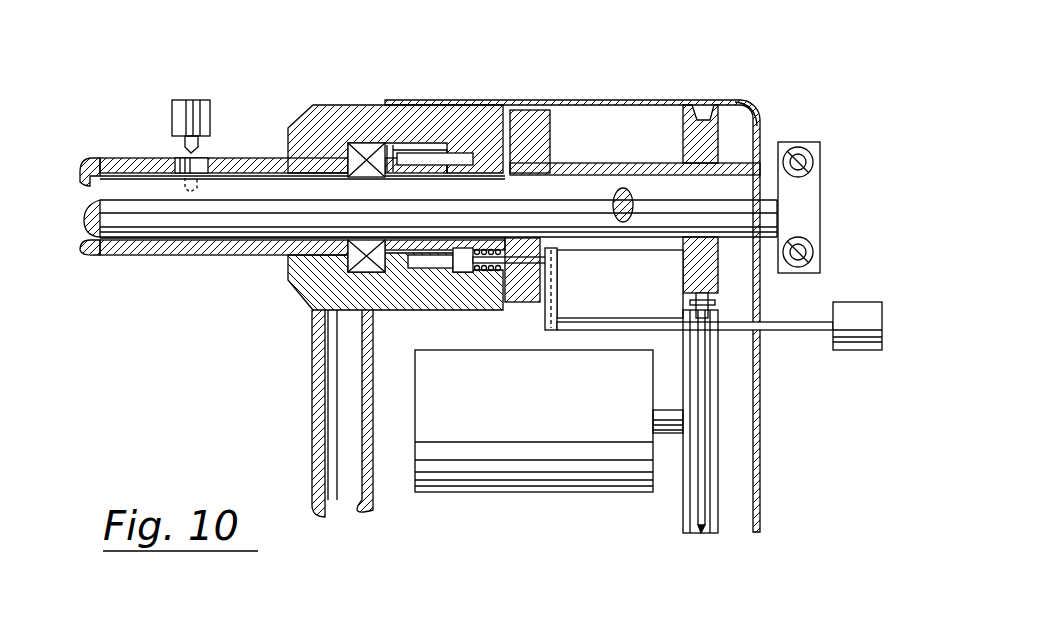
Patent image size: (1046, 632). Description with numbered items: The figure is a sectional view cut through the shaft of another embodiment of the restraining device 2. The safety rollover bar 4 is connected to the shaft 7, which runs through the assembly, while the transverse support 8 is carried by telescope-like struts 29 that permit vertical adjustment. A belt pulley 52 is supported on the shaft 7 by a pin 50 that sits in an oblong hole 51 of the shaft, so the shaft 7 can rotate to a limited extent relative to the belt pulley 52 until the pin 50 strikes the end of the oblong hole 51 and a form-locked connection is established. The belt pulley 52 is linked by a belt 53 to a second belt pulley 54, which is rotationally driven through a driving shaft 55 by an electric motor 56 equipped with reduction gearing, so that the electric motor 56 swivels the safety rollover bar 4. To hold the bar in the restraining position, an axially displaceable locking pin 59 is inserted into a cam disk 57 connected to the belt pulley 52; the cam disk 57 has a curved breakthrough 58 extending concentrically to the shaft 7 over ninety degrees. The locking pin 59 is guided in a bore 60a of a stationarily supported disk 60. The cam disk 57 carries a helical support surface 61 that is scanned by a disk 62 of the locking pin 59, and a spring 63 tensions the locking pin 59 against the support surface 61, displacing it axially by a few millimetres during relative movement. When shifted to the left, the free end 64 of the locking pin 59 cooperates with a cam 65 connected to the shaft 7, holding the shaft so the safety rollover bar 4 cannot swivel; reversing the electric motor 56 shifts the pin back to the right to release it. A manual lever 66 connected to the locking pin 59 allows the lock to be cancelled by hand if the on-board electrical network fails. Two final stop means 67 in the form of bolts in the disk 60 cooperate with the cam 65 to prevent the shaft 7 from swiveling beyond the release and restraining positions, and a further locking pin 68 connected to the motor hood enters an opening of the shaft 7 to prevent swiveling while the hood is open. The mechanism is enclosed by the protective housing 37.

The restraining device 2 is at (74, 116).
The transverse support 8 is at (122, 160).
The shaft 7 is at (155, 182).
The locking pin 68 is at (190, 148).
The cam 65 is at (406, 147).
The final stop means 67 is at (420, 158).
The stationarily supported disk 60 is at (462, 125).
The cam disk 57 is at (520, 133).
The pin 50 is at (616, 190).
The oblong hole 51 is at (624, 189).
The protective housing 37 is at (656, 100).
The belt 53 is at (705, 119).
The belt pulley 52 is at (746, 103).
The safety rollover bar 4 is at (795, 141).
The free end 64 is at (400, 290).
The locking pin 59 is at (426, 264).
The spring 63 is at (487, 270).
The breakthrough 58 is at (515, 270).
The bore 60a is at (477, 252).
The disk 62 is at (536, 262).
The support surface 61 is at (547, 289).
The strut 29 is at (373, 495).
The electric motor 56 is at (546, 475).
The driving shaft 55 is at (670, 434).
The second belt pulley 54 is at (701, 512).
The manual lever 66 is at (845, 331).